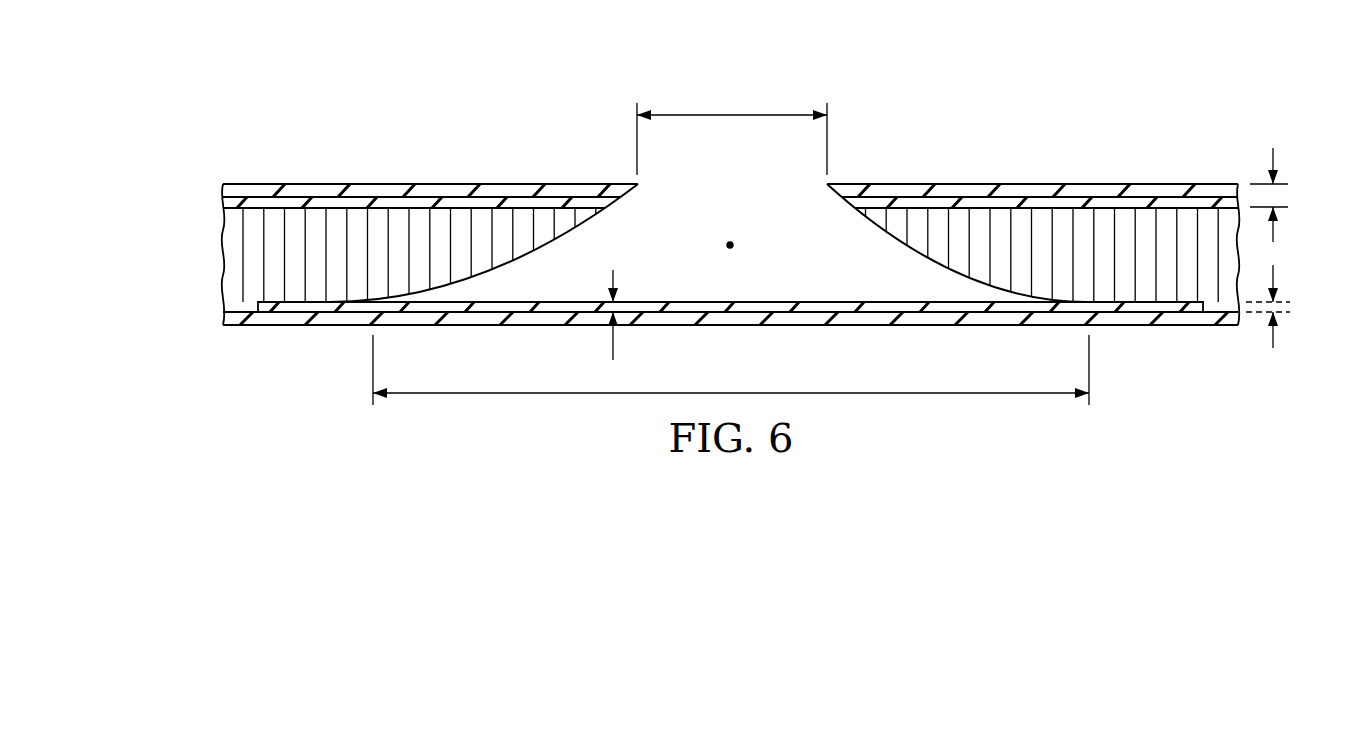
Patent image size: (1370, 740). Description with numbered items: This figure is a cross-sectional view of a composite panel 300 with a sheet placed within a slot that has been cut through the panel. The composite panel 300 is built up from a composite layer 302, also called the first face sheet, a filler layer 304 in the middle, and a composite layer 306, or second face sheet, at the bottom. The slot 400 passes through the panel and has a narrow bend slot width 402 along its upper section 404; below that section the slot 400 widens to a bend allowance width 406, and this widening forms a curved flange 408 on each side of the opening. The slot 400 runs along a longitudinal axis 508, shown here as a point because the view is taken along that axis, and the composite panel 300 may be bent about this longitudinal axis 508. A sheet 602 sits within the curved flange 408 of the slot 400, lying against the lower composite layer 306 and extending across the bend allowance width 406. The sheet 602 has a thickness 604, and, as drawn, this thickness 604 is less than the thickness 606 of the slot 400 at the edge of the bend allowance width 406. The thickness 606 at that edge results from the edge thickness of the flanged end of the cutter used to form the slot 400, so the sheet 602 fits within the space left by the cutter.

The composite panel 300 is at (462, 117).
The composite layer 302 is at (380, 183).
The filler layer 304 is at (221, 255).
The composite layer 306 is at (273, 326).
The slot 400 is at (708, 193).
The bend slot width 402 is at (732, 113).
The section 404 is at (1273, 160).
The bend allowance width 406 is at (730, 392).
The curved flange 408 is at (892, 242).
The longitudinal axis 508 is at (732, 241).
The sheet 602 is at (680, 302).
The thickness 604 is at (612, 345).
The thickness 606 is at (1273, 338).